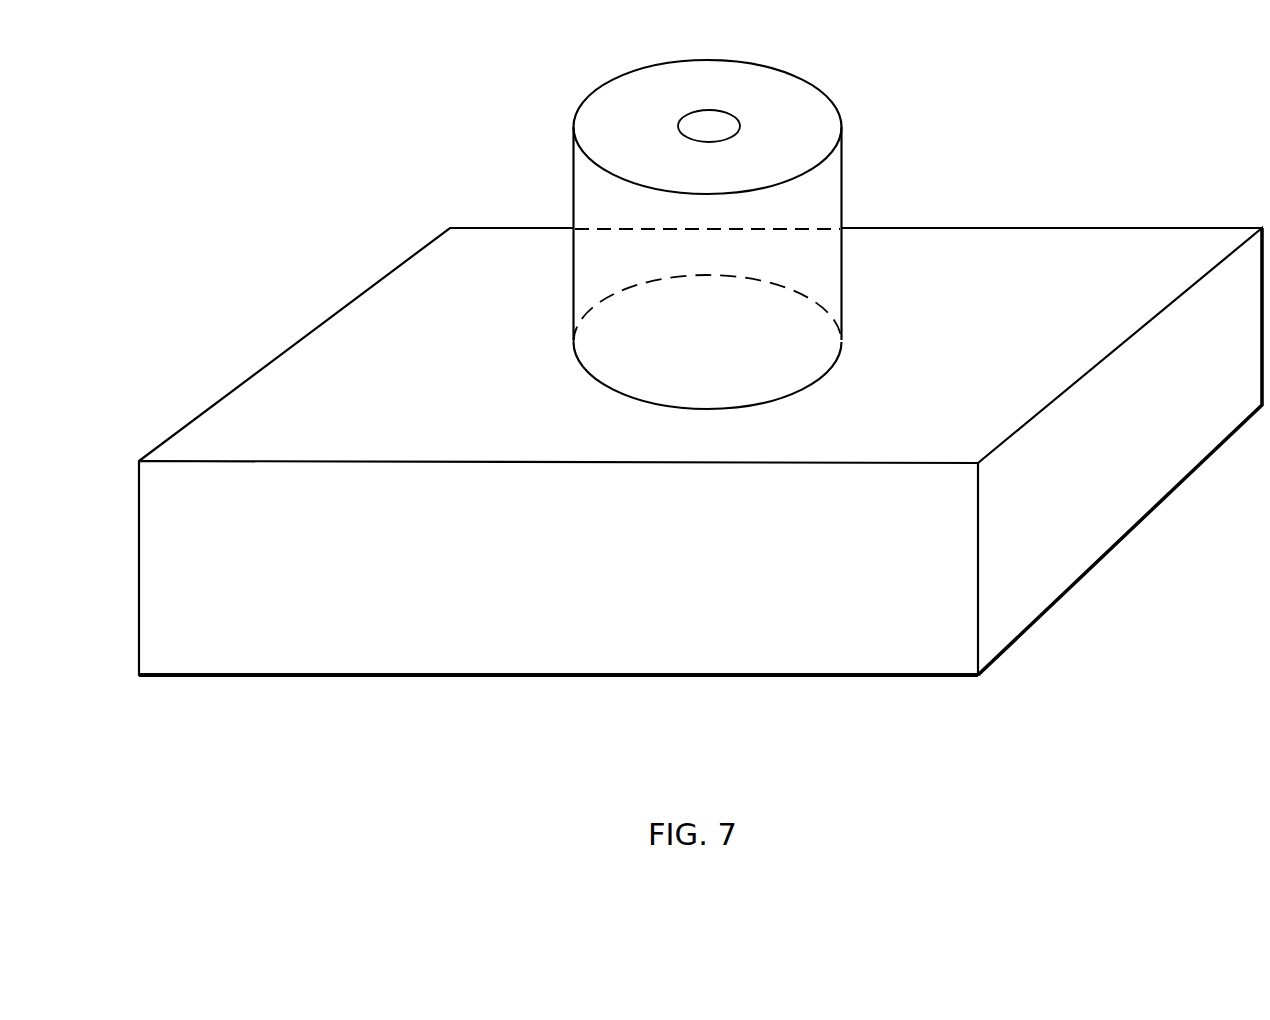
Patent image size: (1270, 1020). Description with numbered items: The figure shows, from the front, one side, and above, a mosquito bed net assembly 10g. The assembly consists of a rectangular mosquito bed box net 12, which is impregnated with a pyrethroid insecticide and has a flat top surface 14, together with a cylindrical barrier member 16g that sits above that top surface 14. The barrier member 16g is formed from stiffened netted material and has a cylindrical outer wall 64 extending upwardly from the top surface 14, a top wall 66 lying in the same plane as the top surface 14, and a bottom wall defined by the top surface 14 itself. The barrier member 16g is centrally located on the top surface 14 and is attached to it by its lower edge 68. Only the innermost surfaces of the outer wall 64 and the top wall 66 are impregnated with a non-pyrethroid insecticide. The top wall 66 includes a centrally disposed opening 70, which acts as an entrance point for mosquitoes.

The mosquito bed net assembly 10g is at (416, 210).
The mosquito bed box net 12 is at (655, 635).
The top surface 14 is at (355, 350).
The cylindrical barrier member 16g is at (712, 226).
The cylindrical outer wall 64 is at (820, 198).
The top wall 66 is at (772, 108).
The lower edge 68 is at (622, 397).
The opening 70 is at (701, 130).